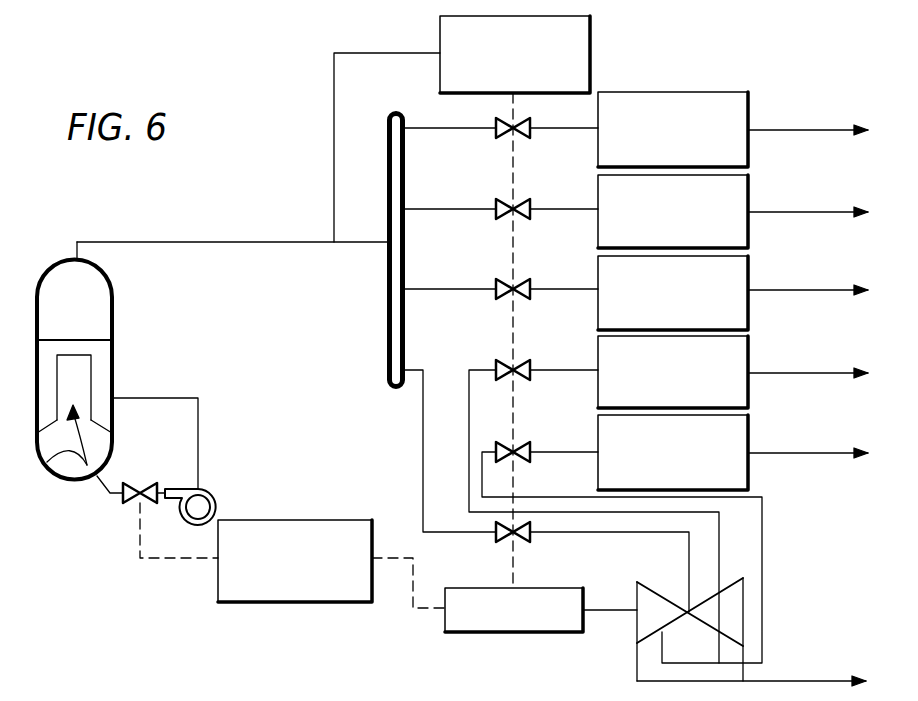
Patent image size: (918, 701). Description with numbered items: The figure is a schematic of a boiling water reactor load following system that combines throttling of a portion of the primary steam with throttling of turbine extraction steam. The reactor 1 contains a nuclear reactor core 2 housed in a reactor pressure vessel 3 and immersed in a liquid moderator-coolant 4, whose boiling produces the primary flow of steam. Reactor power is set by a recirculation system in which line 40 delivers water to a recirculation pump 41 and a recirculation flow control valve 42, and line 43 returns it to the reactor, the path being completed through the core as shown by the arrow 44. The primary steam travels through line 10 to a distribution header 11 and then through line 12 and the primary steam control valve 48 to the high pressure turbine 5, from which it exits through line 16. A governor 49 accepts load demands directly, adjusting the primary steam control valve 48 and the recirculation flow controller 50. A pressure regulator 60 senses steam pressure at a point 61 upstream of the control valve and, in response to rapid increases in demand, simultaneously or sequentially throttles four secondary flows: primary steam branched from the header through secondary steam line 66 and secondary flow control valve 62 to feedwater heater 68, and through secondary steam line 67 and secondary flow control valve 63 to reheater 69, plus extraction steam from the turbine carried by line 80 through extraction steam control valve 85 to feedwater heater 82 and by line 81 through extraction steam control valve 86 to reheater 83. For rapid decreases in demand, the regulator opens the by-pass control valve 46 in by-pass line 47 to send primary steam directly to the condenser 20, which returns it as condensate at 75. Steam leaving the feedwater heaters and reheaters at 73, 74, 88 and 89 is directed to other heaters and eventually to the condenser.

The reactor 1 is at (36, 278).
The nuclear reactor core 2 is at (72, 385).
The reactor pressure vessel 3 is at (112, 303).
The liquid moderator-coolant 4 is at (40, 374).
The arrow 44 is at (50, 462).
The line 10 is at (212, 242).
The point 61 is at (334, 240).
The distribution header 11 is at (389, 286).
The line 12 is at (423, 436).
The line 40 is at (200, 412).
The recirculation pump 41 is at (226, 486).
The recirculation flow control valve 42 is at (152, 486).
The line 43 is at (106, 490).
The recirculation flow controller 50 is at (338, 520).
The governor 49 is at (558, 588).
The primary steam control valve 48 is at (525, 540).
The pressure regulator 60 is at (590, 44).
The by-pass line 47 is at (460, 126).
The by-pass control valve 46 is at (530, 127).
The secondary steam line 67 is at (460, 208).
The secondary flow control valve 63 is at (530, 208).
The secondary steam line 66 is at (460, 288).
The secondary flow control valve 62 is at (530, 288).
The extraction steam control valve 86 is at (545, 362).
The extraction steam control valve 85 is at (530, 450).
The line 81 is at (719, 544).
The line 80 is at (775, 542).
The high pressure turbine 5 is at (660, 596).
The line 16 is at (790, 680).
The condenser 20 is at (748, 92).
The reheater 69 is at (748, 190).
The feedwater heater 68 is at (748, 272).
The reheater 83 is at (748, 348).
The feedwater heater 82 is at (748, 430).
The condensate flow 75 is at (845, 130).
The reheater exit 74 is at (860, 212).
The feedwater heater exit 73 is at (860, 290).
The reheater exit 89 is at (860, 373).
The feedwater heater exit 88 is at (860, 453).